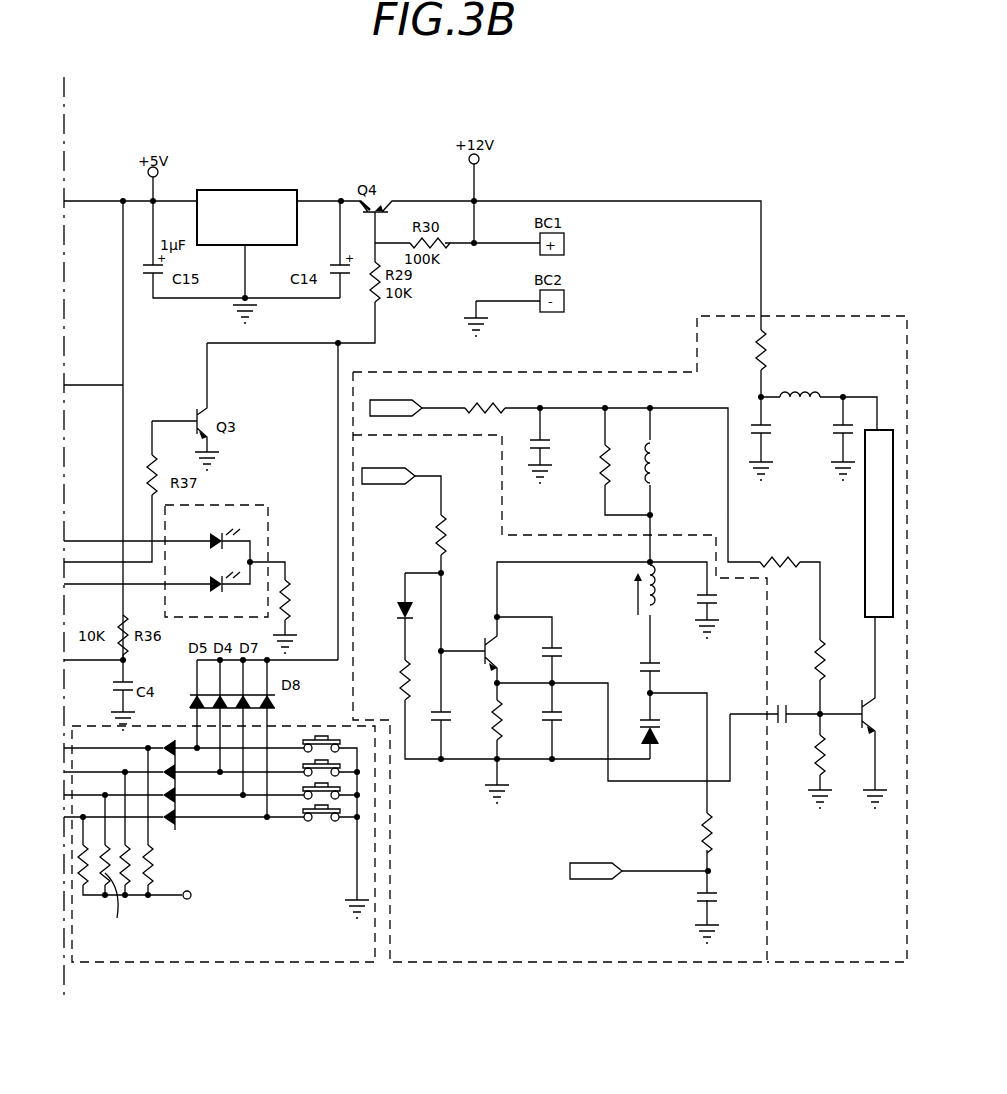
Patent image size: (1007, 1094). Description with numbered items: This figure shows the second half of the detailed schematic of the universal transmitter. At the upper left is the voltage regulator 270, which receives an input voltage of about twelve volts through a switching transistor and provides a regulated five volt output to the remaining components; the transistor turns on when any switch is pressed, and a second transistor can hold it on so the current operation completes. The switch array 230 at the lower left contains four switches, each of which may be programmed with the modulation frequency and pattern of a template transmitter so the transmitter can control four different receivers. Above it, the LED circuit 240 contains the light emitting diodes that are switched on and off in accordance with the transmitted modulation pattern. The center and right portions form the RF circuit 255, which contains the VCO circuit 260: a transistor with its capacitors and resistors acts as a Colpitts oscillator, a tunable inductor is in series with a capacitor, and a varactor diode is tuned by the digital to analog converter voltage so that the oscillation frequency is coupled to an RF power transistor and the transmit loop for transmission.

The voltage regulator 270 is at (266, 186).
The light emitting diode (LED) circuit 240 is at (232, 505).
The switch array 230 is at (195, 962).
The radio frequency (RF) circuit 255 is at (797, 316).
The voltage controlled oscillator (VCO) circuit 260 is at (768, 855).